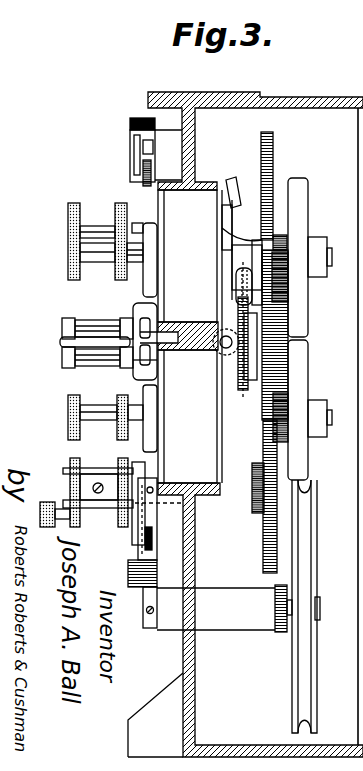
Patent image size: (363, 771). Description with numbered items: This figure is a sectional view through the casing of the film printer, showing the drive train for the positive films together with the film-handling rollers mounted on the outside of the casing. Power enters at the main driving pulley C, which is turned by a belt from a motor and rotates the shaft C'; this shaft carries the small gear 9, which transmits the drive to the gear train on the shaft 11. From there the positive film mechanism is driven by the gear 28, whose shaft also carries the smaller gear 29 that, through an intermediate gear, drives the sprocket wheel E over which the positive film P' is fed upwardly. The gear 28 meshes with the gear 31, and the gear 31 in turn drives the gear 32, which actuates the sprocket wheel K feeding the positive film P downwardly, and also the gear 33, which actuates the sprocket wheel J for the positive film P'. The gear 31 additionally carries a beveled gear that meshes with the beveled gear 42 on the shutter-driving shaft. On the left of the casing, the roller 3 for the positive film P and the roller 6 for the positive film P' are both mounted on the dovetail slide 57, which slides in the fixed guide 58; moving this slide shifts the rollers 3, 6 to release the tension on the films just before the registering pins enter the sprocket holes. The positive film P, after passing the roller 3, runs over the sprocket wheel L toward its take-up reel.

The gear 32 is at (277, 152).
The sprocket wheel K is at (68, 216).
The sprocket wheel L is at (68, 272).
The dovetail slide 57 is at (137, 322).
The roller 3 is at (83, 327).
The roller 6 is at (82, 366).
The fixed guide 58 is at (143, 378).
The sprocket wheel J is at (82, 426).
The sprocket wheel E is at (82, 480).
The beveled gear 42 is at (224, 327).
The shaft 11 is at (242, 266).
The gear 31 is at (277, 353).
The gear 33 is at (283, 445).
The smaller gear 29 is at (257, 517).
The gear 28 is at (277, 543).
The small gear 9 is at (275, 590).
The shaft C' is at (201, 570).
The main driving pulley C is at (314, 455).